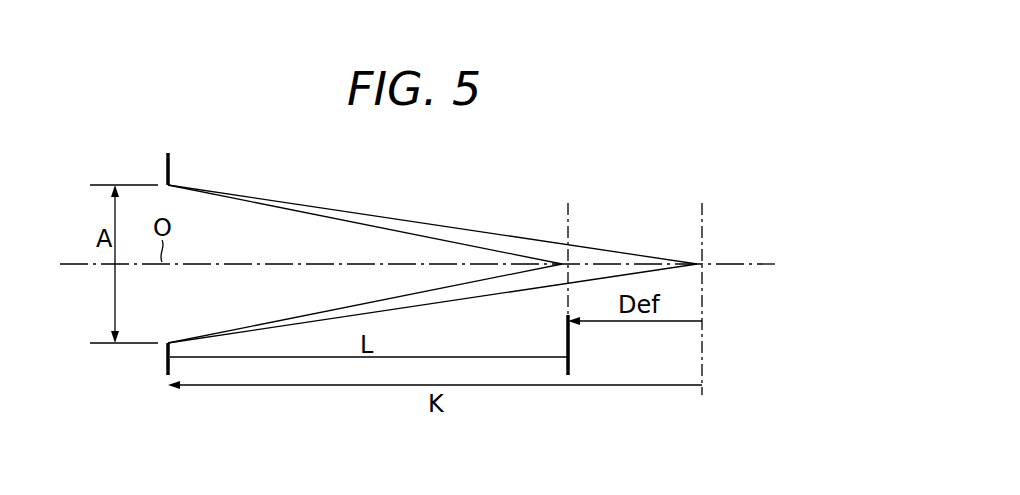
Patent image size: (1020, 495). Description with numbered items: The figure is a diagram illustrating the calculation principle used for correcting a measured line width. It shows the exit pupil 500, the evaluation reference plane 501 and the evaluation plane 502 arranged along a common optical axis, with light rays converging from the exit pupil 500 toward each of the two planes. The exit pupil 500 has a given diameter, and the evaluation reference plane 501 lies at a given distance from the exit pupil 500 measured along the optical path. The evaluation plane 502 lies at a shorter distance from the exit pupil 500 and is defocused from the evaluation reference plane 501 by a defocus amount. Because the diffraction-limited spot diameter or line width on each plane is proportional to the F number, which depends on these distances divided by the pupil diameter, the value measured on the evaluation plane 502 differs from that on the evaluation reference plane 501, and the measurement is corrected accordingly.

The exit pupil 500 is at (171, 155).
The evaluation reference plane 501 is at (703, 203).
The evaluation plane 502 is at (569, 203).